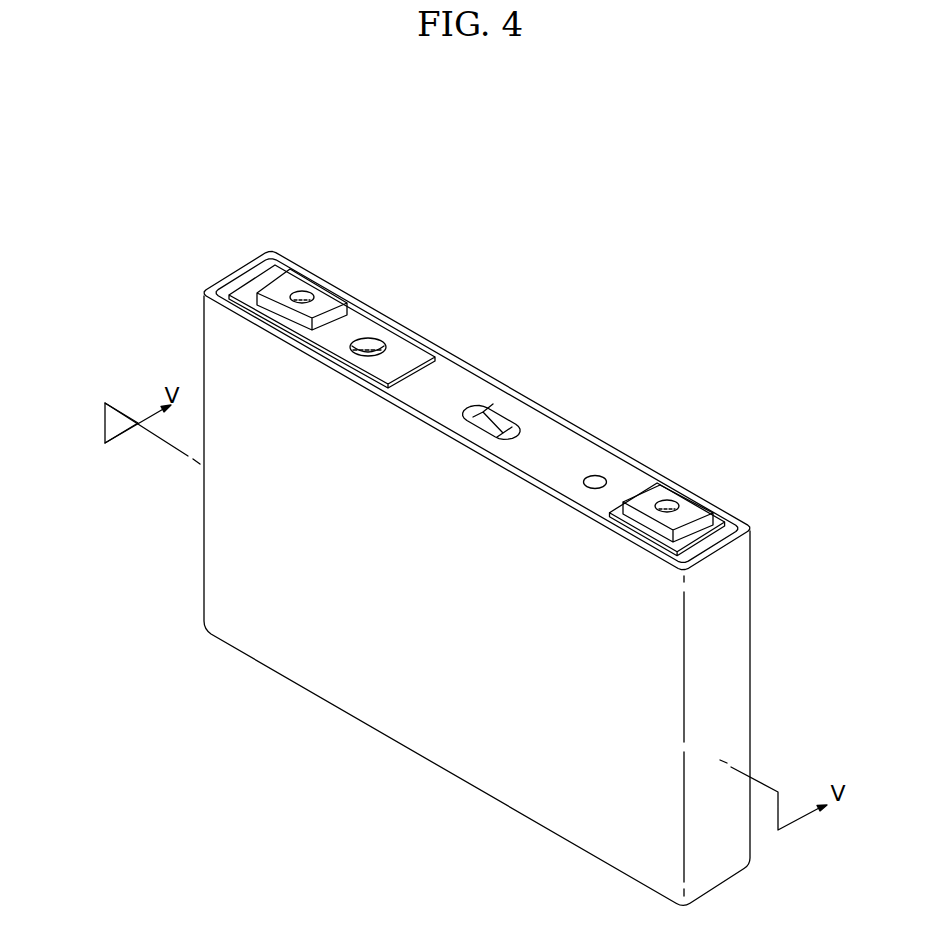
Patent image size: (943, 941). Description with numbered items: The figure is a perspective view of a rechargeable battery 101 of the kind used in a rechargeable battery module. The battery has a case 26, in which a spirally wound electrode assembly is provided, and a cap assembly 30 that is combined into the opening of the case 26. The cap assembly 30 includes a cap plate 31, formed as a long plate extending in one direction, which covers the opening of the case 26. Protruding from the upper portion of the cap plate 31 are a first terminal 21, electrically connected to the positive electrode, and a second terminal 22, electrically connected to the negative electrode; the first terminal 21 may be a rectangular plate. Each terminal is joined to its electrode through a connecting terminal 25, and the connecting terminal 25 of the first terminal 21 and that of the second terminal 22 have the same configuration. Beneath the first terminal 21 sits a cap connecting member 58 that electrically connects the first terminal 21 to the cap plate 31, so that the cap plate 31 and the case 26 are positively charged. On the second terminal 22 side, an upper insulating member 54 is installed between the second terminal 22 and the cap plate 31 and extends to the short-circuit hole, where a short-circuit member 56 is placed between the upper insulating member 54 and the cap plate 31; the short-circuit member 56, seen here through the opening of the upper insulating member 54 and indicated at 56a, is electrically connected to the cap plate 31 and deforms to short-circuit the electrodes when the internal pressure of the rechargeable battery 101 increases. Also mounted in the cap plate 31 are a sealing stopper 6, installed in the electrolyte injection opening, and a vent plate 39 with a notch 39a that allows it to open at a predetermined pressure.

The rechargeable battery 101 is at (499, 218).
The case 26 is at (418, 727).
The cap assembly 30 is at (575, 430).
The cap plate 31 is at (453, 383).
The upper insulating member 54 is at (255, 291).
The cap connecting member 58 is at (720, 515).
The second terminal 22 is at (325, 297).
The first terminal 21 is at (690, 507).
The connecting terminal 25 is at (304, 295).
The short-circuit member 56 is at (377, 345).
The short circuit member 56a is at (363, 338).
The vent plate 39 is at (490, 410).
The notch 39a is at (502, 420).
The sealing stopper 6 is at (598, 476).